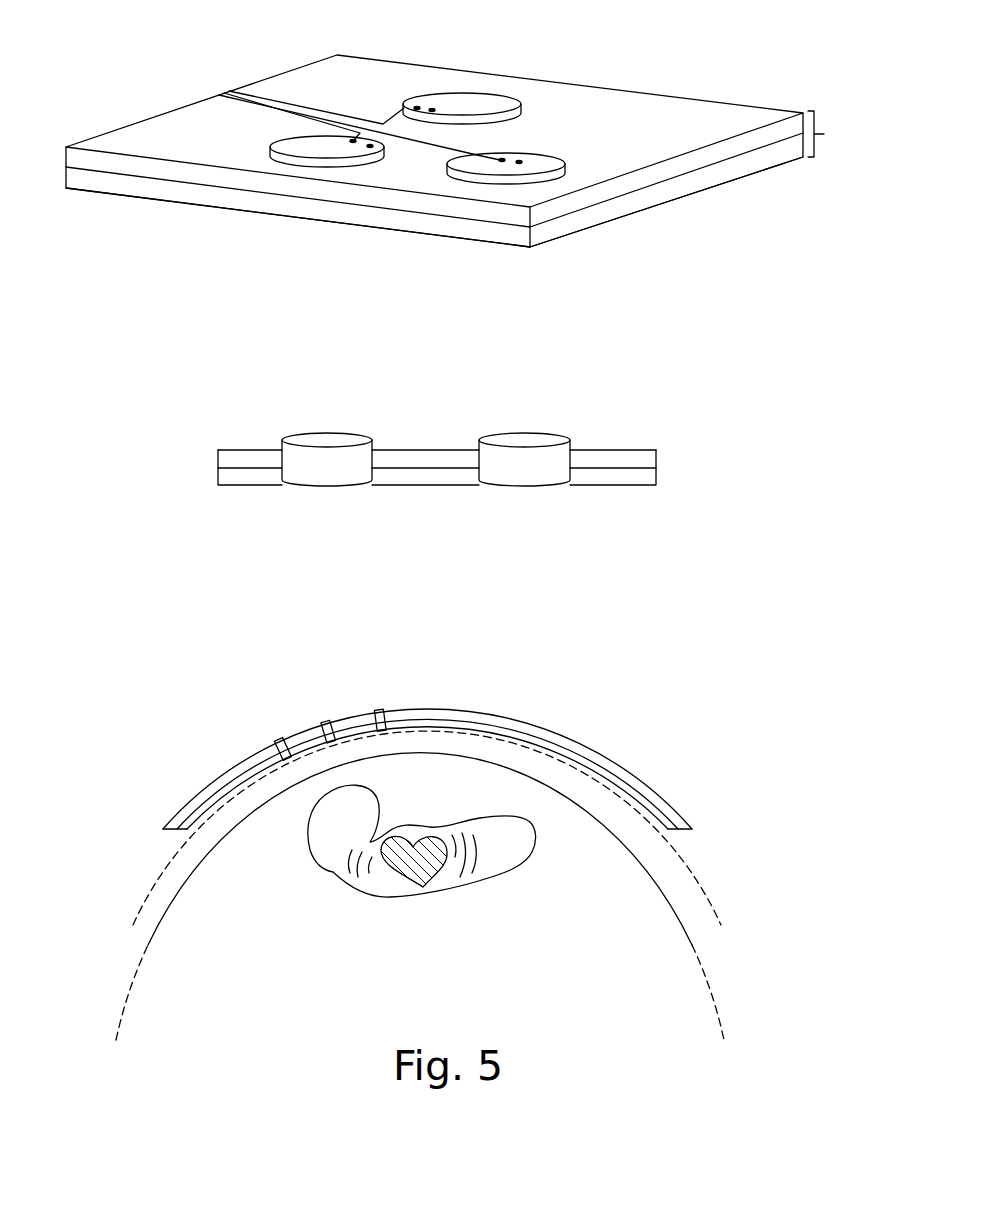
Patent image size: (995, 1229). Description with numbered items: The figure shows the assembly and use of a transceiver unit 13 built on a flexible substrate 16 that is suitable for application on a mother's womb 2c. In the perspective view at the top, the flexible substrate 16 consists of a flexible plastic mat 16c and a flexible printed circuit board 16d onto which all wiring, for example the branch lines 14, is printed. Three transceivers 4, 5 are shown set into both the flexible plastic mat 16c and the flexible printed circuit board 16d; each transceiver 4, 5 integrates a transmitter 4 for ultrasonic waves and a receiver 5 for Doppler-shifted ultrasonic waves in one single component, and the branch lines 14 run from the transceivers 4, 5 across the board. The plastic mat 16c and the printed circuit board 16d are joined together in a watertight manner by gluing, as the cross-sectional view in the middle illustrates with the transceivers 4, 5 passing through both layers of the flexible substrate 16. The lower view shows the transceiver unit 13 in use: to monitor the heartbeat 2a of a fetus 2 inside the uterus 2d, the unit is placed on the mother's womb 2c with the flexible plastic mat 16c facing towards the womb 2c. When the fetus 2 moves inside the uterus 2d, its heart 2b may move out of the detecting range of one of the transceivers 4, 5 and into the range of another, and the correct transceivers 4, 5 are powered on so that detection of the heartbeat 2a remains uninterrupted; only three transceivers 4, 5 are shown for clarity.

The transceiver unit 13 is at (740, 64).
The branch lines 14 is at (217, 89).
The transmitter 4 is at (293, 152).
The receiver 5 is at (344, 391).
The flexible substrate 16 is at (748, 864).
The flexible plastic mat 16c is at (242, 200).
The flexible printed circuit board 16d is at (603, 190).
The fetus 2 is at (355, 890).
The heartbeat 2a is at (482, 847).
The heart 2b is at (423, 885).
The mother's womb 2c is at (708, 902).
The uterus 2d is at (692, 945).